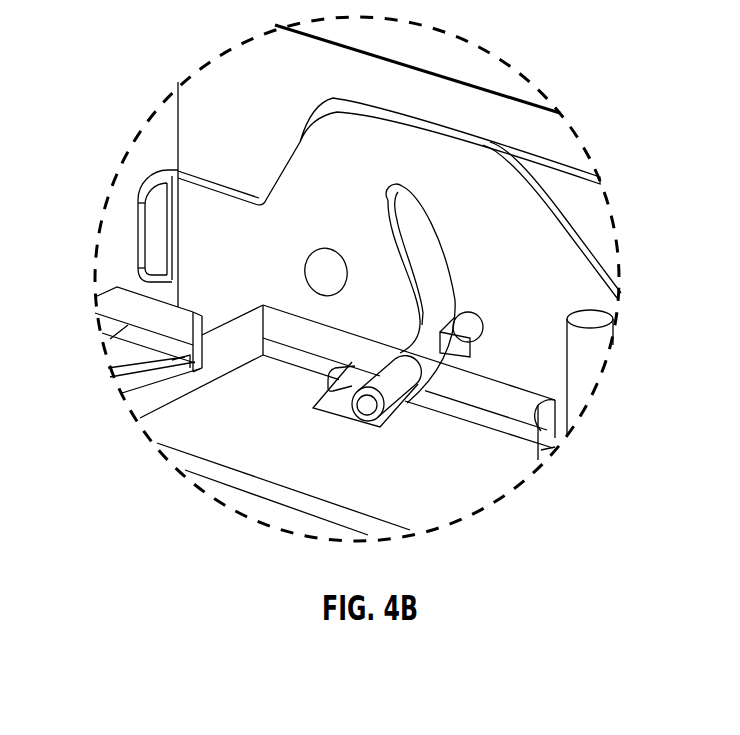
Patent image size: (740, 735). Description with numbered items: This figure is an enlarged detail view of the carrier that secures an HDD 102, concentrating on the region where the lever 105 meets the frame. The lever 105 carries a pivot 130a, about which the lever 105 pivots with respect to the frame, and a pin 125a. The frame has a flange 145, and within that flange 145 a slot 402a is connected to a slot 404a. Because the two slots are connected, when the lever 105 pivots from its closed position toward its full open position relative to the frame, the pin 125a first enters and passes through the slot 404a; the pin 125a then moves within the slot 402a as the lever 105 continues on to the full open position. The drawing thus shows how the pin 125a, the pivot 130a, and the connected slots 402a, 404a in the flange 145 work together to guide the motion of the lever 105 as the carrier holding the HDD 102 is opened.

The HDD 102 is at (113, 237).
The lever 105 is at (557, 236).
The pivot 130a is at (320, 260).
The slot 402a is at (407, 210).
The slot 404a is at (393, 417).
The pin 125a is at (365, 413).
The flange 145 is at (503, 477).